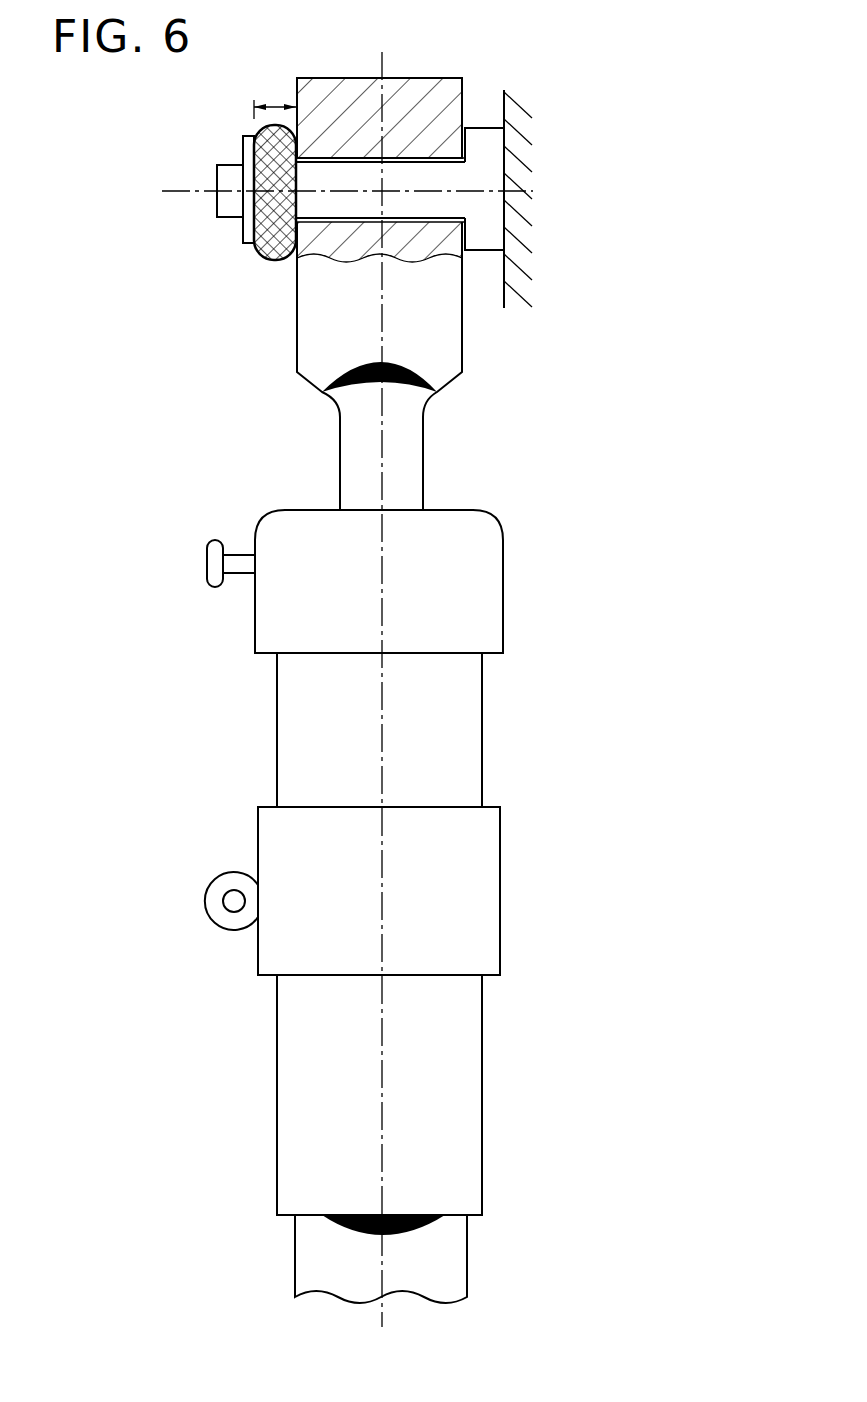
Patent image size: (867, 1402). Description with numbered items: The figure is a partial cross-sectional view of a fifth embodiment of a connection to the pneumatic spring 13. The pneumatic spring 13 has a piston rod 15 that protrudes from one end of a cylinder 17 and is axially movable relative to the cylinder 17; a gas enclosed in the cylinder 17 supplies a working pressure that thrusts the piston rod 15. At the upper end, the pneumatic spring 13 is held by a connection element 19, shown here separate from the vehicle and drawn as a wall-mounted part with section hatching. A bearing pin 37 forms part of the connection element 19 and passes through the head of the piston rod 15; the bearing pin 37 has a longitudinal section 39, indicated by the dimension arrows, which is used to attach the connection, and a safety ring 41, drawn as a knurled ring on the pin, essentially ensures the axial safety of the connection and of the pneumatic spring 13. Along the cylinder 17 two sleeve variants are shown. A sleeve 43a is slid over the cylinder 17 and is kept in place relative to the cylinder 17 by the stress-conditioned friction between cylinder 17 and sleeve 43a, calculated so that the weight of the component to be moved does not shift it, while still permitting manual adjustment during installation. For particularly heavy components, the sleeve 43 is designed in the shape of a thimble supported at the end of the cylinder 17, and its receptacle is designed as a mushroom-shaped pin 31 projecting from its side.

The pneumatic spring 13 is at (153, 850).
The piston rod 15 is at (435, 450).
The cylinder 17 is at (494, 1098).
The connection element 19 is at (534, 337).
The mushroom-shaped pin 31 is at (217, 528).
The bearing pin 37 is at (443, 177).
The longitudinal section 39 is at (274, 103).
The safety ring 41 is at (250, 230).
The sleeve 43 is at (515, 573).
The sleeve 43a is at (512, 862).